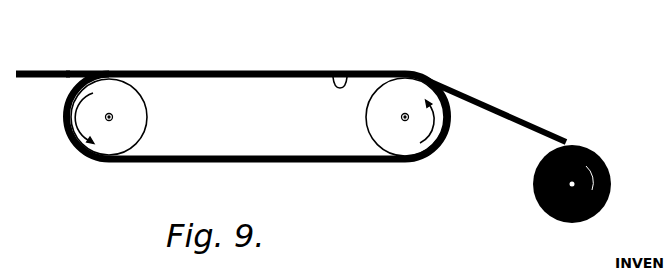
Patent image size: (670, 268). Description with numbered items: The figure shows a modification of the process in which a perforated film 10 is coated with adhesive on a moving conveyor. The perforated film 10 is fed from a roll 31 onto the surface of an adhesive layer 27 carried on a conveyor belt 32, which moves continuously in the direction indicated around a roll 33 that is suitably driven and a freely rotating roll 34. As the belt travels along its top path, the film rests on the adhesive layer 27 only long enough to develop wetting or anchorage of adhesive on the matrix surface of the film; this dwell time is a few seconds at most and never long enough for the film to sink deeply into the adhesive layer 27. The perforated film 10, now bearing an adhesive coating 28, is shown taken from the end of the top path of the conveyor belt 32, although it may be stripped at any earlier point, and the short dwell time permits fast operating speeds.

The perforated film 10 is at (49, 70).
The adhesive coating 28 is at (57, 79).
The adhesive layer 27 is at (78, 148).
The roll 33 is at (108, 150).
The freely rotating roll 34 is at (405, 143).
The conveyor belt 32 is at (357, 71).
The roll 31 is at (595, 153).